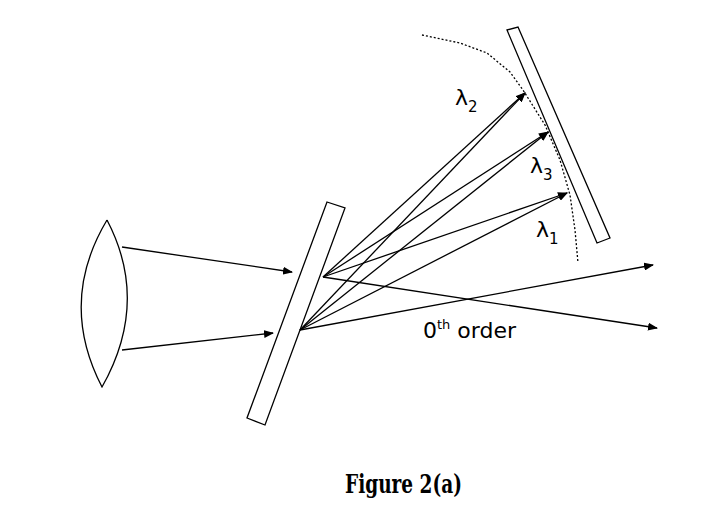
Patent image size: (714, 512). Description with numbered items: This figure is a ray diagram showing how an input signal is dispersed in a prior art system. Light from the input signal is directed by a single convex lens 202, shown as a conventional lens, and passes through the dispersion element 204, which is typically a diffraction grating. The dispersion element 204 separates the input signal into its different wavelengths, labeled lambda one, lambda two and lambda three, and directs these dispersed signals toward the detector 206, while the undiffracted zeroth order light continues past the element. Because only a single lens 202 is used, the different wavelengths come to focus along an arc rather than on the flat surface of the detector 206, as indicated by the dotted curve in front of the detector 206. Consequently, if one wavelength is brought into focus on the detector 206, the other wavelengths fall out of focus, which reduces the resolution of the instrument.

The single lens 202 is at (105, 380).
The dispersion element 204 is at (270, 408).
The detector 206 is at (583, 183).